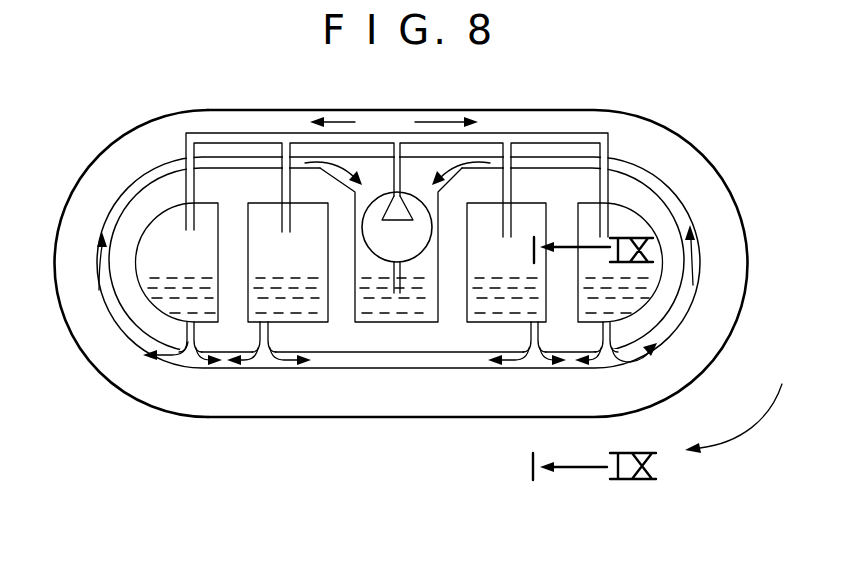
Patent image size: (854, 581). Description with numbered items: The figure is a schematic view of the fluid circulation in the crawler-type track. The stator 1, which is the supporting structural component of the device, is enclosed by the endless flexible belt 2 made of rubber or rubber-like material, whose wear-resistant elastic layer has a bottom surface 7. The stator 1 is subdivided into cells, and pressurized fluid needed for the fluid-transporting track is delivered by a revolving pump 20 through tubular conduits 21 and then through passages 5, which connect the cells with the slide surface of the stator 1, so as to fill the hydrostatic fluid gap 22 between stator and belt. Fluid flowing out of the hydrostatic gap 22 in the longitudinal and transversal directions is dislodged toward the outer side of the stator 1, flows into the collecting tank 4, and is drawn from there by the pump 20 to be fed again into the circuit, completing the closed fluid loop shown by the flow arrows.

The stator 1 is at (645, 202).
The endless flexible belt 2 is at (352, 404).
The collecting tank 4 is at (427, 265).
The passages 5 is at (193, 330).
The bottom surface 7 is at (115, 393).
The revolving pump 20 is at (370, 223).
The tubular conduits 21 is at (494, 138).
The hydrostatic fluid gap 22 is at (685, 307).